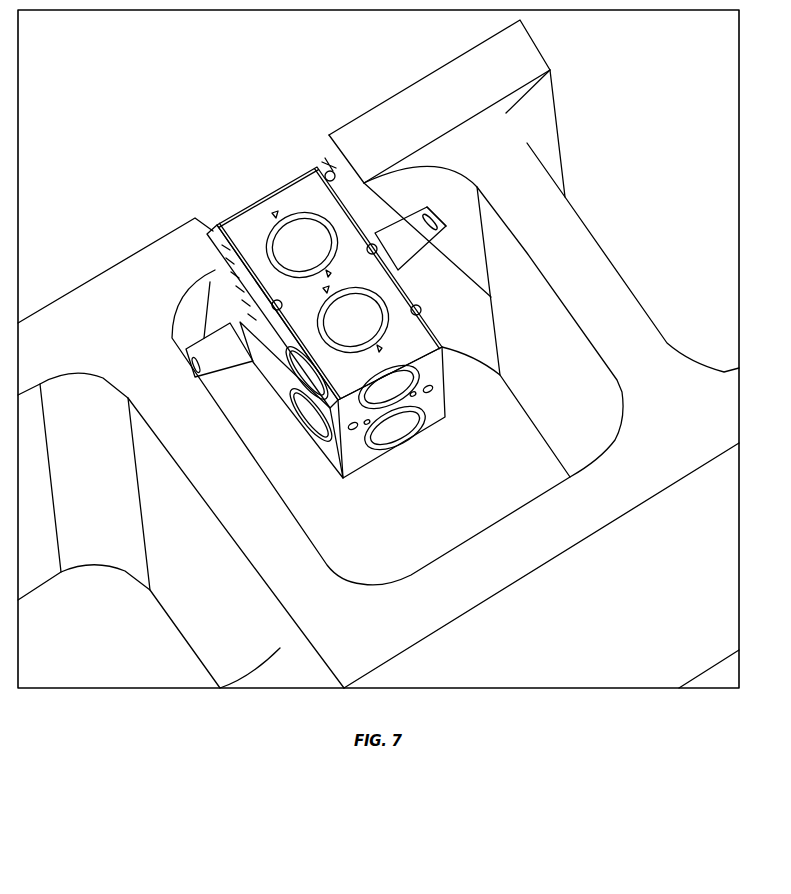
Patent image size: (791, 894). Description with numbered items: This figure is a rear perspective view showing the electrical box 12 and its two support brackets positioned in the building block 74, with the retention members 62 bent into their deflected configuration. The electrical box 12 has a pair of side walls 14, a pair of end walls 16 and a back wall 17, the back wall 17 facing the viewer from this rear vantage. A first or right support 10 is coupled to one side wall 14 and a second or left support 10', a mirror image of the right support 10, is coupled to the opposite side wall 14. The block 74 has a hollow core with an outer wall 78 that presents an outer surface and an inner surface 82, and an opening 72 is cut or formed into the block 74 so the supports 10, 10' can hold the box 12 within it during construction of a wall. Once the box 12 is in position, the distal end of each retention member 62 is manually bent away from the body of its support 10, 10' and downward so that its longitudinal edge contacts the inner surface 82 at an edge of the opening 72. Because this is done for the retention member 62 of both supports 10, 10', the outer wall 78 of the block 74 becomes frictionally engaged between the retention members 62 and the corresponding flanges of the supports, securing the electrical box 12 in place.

The building block 74 is at (615, 170).
The outer wall 78 is at (388, 116).
The electrical box 12 is at (257, 179).
The opening 72 is at (325, 165).
The end wall 16 is at (403, 306).
The side wall 14 is at (328, 457).
The back wall 17 is at (367, 460).
The support 10 is at (265, 400).
The second support 10' is at (434, 173).
The inner surface 82 is at (208, 281).
The retention member 62 is at (218, 366).